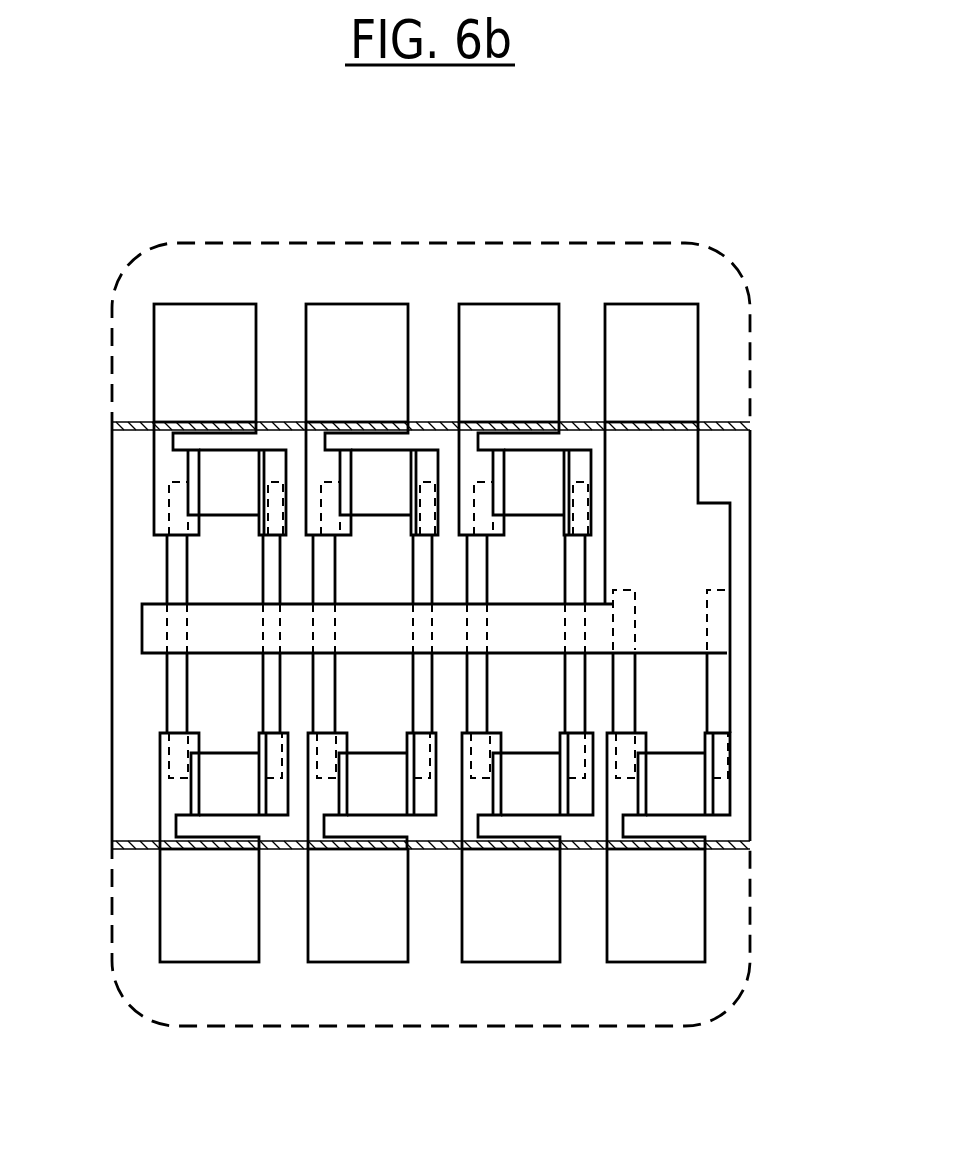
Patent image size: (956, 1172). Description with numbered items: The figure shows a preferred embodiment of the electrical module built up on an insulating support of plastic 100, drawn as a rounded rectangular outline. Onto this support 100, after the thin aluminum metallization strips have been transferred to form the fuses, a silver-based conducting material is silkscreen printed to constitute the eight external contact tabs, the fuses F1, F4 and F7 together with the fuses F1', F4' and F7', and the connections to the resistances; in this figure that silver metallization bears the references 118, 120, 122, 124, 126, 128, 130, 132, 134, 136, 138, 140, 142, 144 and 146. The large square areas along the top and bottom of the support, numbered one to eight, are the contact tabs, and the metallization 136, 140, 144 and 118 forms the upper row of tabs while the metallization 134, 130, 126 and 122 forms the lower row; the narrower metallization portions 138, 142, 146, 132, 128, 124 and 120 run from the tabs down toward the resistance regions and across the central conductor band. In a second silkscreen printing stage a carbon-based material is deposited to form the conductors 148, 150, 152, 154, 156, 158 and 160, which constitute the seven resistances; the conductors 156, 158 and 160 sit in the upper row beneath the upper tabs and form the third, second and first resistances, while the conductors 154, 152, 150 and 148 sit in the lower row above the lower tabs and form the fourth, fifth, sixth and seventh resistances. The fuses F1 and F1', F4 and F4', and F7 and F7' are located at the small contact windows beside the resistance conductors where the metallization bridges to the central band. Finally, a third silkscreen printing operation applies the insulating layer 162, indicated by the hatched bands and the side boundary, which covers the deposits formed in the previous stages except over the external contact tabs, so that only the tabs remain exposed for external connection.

The insulating support of plastic 100 is at (745, 297).
The silver-based metallization 118 is at (660, 322).
The silver-based metallization 120 is at (725, 792).
The silver-based metallization 122 is at (665, 957).
The silver-based metallization 124 is at (583, 803).
The silver-based metallization 126 is at (515, 957).
The silver-based metallization 128 is at (432, 815).
The silver-based metallization 130 is at (363, 957).
The silver-based metallization 132 is at (283, 815).
The silver-based metallization 134 is at (213, 957).
The silver-based metallization 136 is at (212, 325).
The silver-based metallization 138 is at (277, 457).
The silver-based metallization 140 is at (344, 325).
The silver-based metallization 142 is at (428, 457).
The silver-based metallization 144 is at (498, 322).
The silver-based metallization 146 is at (570, 457).
The carbon-based conductor 148 is at (667, 772).
The carbon-based conductor 150 is at (529, 772).
The carbon-based conductor 152 is at (376, 772).
The carbon-based conductor 154 is at (226, 772).
The carbon-based conductor 156 is at (228, 503).
The carbon-based conductor 158 is at (378, 503).
The carbon-based conductor 160 is at (530, 503).
The insulating layer 162 is at (114, 435).
The fuse F1 is at (455, 571).
The fuse F1' is at (613, 554).
The fuse F4 is at (147, 691).
The fuse F4' is at (294, 688).
The fuse F7 is at (717, 658).
The fuse F7' is at (768, 689).